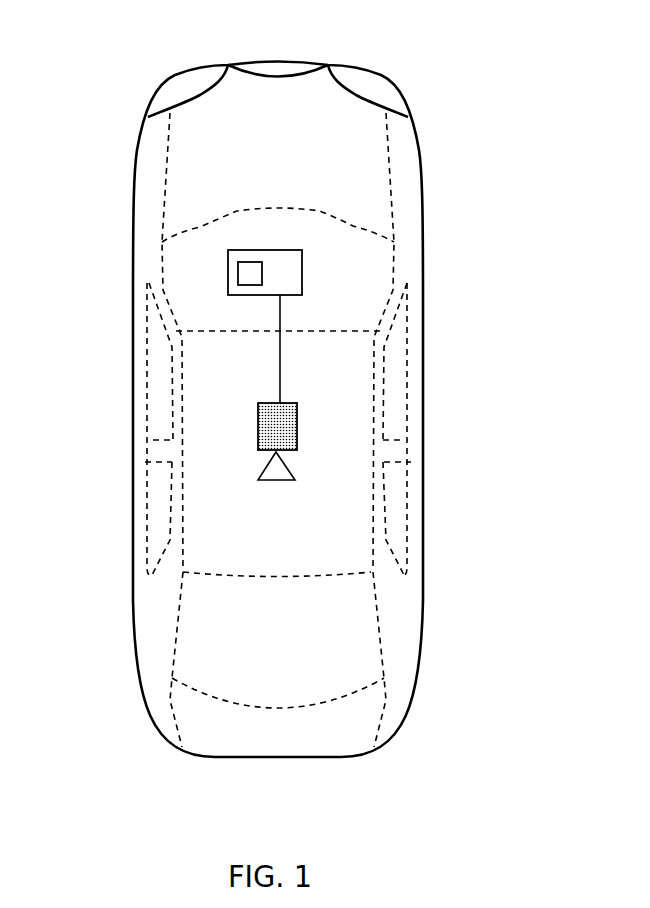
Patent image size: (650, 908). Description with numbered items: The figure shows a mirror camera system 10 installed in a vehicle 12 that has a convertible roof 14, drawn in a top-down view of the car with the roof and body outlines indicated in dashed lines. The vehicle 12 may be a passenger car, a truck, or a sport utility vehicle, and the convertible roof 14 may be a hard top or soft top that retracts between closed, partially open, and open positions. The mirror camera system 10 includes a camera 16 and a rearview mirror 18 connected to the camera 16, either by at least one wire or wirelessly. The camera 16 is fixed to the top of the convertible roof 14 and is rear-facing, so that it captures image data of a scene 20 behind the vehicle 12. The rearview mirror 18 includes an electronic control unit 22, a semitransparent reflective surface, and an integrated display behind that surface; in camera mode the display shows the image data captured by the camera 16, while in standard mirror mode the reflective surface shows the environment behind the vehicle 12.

The mirror camera system 10 is at (230, 238).
The vehicle 12 is at (423, 358).
The convertible roof 14 is at (320, 425).
The camera 16 is at (258, 432).
The rearview mirror 18 is at (302, 273).
The scene 20 is at (270, 815).
The electronic control unit 22 is at (250, 285).